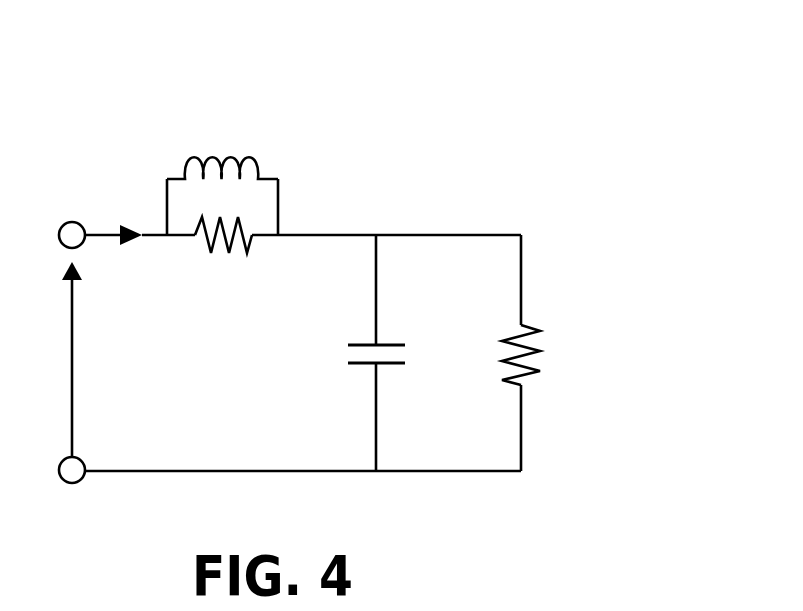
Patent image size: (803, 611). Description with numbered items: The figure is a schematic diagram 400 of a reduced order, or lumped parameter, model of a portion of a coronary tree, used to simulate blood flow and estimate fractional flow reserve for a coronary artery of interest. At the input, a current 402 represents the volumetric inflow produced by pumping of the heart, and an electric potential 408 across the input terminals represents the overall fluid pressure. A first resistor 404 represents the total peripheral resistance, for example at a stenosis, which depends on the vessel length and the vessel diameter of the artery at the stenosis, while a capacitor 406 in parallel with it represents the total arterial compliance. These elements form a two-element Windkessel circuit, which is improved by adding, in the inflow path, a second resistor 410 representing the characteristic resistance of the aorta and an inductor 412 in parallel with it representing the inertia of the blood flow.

The schematic diagram 400 is at (620, 96).
The current 402 is at (127, 201).
The first resistor 404 is at (571, 354).
The capacitor 406 is at (329, 354).
The electric potential 408 is at (73, 353).
The second resistor 410 is at (223, 274).
The inductor 412 is at (222, 140).